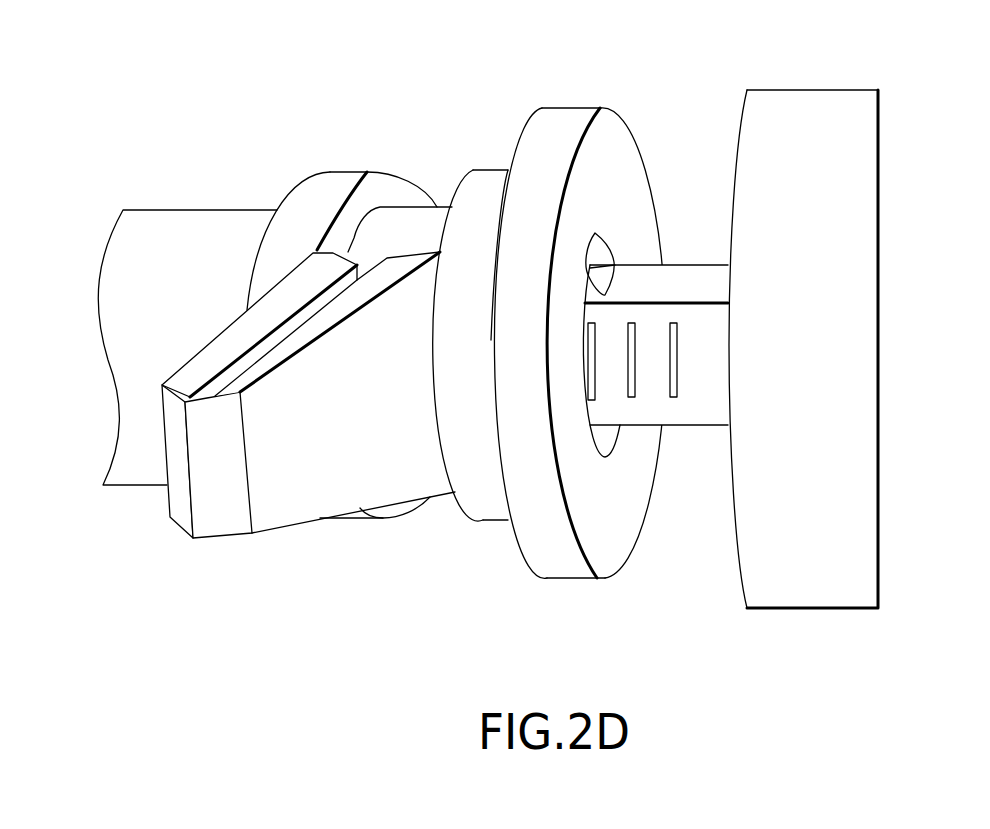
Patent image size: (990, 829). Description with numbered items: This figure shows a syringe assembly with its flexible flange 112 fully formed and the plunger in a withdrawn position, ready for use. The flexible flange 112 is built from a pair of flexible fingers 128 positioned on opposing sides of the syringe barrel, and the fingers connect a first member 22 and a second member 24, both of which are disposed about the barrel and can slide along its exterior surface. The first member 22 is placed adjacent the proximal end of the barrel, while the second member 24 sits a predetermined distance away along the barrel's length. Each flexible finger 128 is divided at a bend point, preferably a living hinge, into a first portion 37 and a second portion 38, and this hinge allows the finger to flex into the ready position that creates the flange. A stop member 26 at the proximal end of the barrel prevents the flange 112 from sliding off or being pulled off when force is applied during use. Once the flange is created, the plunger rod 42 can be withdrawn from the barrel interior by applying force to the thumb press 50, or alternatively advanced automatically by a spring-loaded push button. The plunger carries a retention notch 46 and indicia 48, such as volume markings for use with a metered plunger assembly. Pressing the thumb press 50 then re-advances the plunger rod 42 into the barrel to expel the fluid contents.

The flexible flange 112 is at (331, 112).
The first member 22 is at (483, 188).
The second member 24 is at (303, 200).
The stop member 26 is at (552, 548).
The first portion 37 is at (385, 518).
The second portion 38 is at (232, 343).
The plunger rod 42 is at (685, 280).
The retention notch 46 is at (607, 273).
The indicia 48 is at (632, 397).
The thumb press 50 is at (848, 477).
The flexible fingers 128 is at (300, 455).